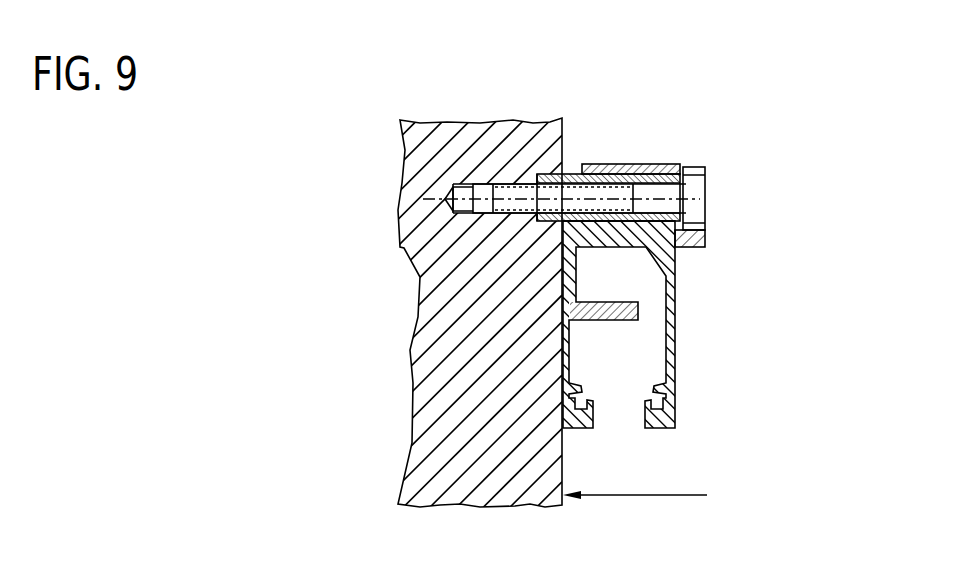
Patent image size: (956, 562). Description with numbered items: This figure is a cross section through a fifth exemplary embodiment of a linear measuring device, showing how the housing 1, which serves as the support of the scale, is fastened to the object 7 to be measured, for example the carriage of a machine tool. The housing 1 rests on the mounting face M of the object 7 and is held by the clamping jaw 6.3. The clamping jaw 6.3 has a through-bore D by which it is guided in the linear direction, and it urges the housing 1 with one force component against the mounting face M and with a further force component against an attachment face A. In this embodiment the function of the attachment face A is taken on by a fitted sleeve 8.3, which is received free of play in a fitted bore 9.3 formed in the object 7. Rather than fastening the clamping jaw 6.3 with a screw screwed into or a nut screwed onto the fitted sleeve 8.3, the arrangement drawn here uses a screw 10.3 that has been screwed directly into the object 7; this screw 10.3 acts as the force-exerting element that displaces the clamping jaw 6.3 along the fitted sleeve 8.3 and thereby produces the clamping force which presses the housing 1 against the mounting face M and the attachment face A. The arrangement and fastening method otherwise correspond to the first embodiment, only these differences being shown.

The housing 1 is at (665, 418).
The clamping jaw 6.3 is at (643, 163).
The object 7 is at (442, 453).
The fitted sleeve 8.3 is at (547, 175).
The fitted bore 9.3 is at (538, 176).
The screw 10.3 is at (697, 192).
The attachment face A is at (627, 223).
The through-bore D is at (683, 167).
The mounting face M is at (651, 495).